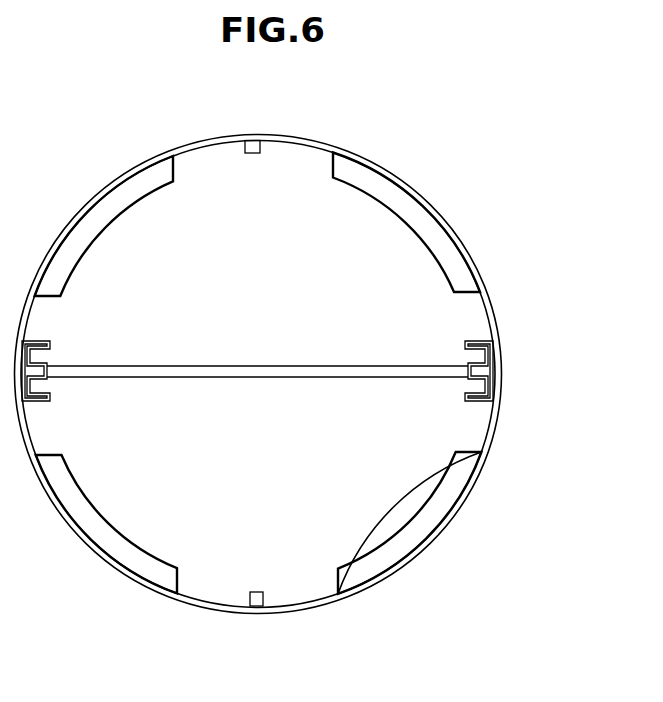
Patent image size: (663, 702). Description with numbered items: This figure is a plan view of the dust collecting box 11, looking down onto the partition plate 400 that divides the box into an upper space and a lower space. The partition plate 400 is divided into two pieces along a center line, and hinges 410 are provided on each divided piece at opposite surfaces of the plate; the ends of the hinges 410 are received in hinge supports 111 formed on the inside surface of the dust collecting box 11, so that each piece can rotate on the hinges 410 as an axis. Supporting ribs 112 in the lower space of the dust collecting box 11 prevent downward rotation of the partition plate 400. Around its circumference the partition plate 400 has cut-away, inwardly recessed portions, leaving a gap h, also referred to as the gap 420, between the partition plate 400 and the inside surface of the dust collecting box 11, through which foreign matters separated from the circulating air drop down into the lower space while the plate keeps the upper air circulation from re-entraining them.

The dust collecting box 11 is at (493, 331).
The hinge support 111 is at (485, 371).
The supporting rib 112 is at (262, 601).
The partition plate 400 is at (416, 469).
The hinge 410 is at (490, 403).
The gap 420 is at (415, 527).
The gap h is at (148, 509).